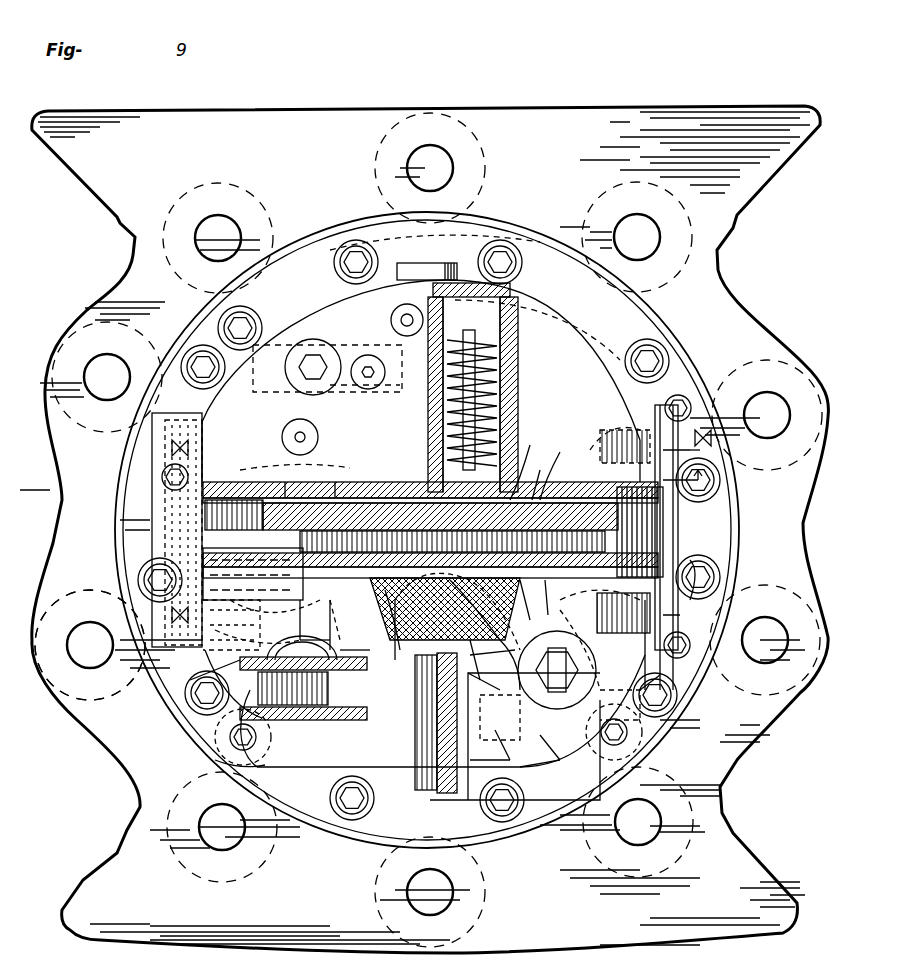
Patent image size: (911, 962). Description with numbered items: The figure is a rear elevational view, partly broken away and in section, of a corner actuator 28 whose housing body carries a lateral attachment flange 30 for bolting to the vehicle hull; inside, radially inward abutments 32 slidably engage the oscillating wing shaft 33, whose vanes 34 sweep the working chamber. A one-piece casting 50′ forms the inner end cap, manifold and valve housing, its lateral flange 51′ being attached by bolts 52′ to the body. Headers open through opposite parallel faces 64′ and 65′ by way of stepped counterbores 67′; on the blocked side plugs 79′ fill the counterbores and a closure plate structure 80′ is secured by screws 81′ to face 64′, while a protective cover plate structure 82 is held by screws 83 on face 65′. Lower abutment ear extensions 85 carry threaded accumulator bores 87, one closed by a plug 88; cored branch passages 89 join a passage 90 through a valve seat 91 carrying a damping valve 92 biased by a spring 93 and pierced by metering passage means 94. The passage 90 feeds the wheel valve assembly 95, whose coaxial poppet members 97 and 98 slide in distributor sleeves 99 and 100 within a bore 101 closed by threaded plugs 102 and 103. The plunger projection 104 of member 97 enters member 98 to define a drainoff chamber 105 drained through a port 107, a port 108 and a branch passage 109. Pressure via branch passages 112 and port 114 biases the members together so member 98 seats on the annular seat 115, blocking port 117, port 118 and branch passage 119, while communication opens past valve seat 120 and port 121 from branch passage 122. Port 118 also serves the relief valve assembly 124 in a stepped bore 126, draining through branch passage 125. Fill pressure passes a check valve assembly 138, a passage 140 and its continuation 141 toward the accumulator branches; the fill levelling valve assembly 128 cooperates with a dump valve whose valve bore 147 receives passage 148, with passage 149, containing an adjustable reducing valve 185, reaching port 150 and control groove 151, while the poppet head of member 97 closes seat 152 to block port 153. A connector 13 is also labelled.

The actuator 28 is at (588, 102).
The lateral attachment flange 30 is at (735, 925).
The lateral flange 51′ is at (305, 258).
The bolts 52′ is at (435, 237).
The vanes 34 is at (625, 362).
The fill levelling valve assembly 128 is at (452, 262).
The stepped bore 126 is at (520, 320).
The relief valve assembly 124 is at (505, 400).
The valve seat 120 is at (512, 470).
The casting 50′ is at (570, 340).
The distributor sleeve 99 is at (400, 482).
The port 118 is at (420, 470).
The main control or wheel valve assembly 95 is at (345, 482).
The plunger barrel poppet member 98 is at (640, 487).
The connecting branch passage 109 is at (330, 432).
The stepped counterbores 67′ is at (253, 550).
The port 153 is at (245, 623).
The threaded plug 102 is at (190, 510).
The closure plate structure 80′ is at (152, 480).
The chamber 13 is at (255, 482).
The passage 140 is at (285, 482).
The annular control groove 151 is at (335, 482).
The plunger barrel poppet member 97 is at (296, 434).
The check valve assembly 138 is at (325, 356).
The abutments 32 is at (305, 519).
The connecting branch passage 125 is at (365, 399).
The port 114 is at (680, 520).
The threaded plug 103 is at (630, 440).
The branch connecting passages 112 is at (682, 650).
The protective cover plate structure 82 is at (704, 430).
The screws 83 is at (680, 615).
The port 108 is at (690, 600).
The connecting branch passage 119 is at (630, 620).
The face 65′ is at (685, 688).
The terminal plunger projection 104 is at (640, 720).
The lower abutment ear extensions 85 is at (650, 740).
The cored branch passages 89 is at (292, 722).
The passage 149 is at (305, 745).
The spring 93 is at (420, 790).
The connecting branch passage 122 is at (557, 650).
The threaded bores 87 is at (215, 737).
The adjustable reducing valve 185 is at (215, 760).
The face 64′ is at (190, 680).
The plugs 79′ is at (160, 640).
The screws 81′ is at (120, 610).
The continuation of the bypass passage 141 is at (329, 619).
The seat 152 is at (321, 625).
The damping valve 92 is at (380, 620).
The metering passage means 94 is at (377, 630).
The bore 101 is at (351, 639).
The annular seat 115 is at (475, 610).
The port 117 is at (527, 600).
The port 121 is at (552, 597).
The passage 148 is at (485, 644).
The passage 90 is at (511, 650).
The port 150 is at (492, 639).
The valve seat 91 is at (484, 668).
The wing shaft 33 is at (506, 731).
The plug 88 is at (554, 736).
The valve bore 147 is at (490, 751).
The distributor sleeve 100 is at (532, 460).
The port 107 is at (560, 465).
The pressure relief and leakage drainoff chamber 105 is at (540, 474).